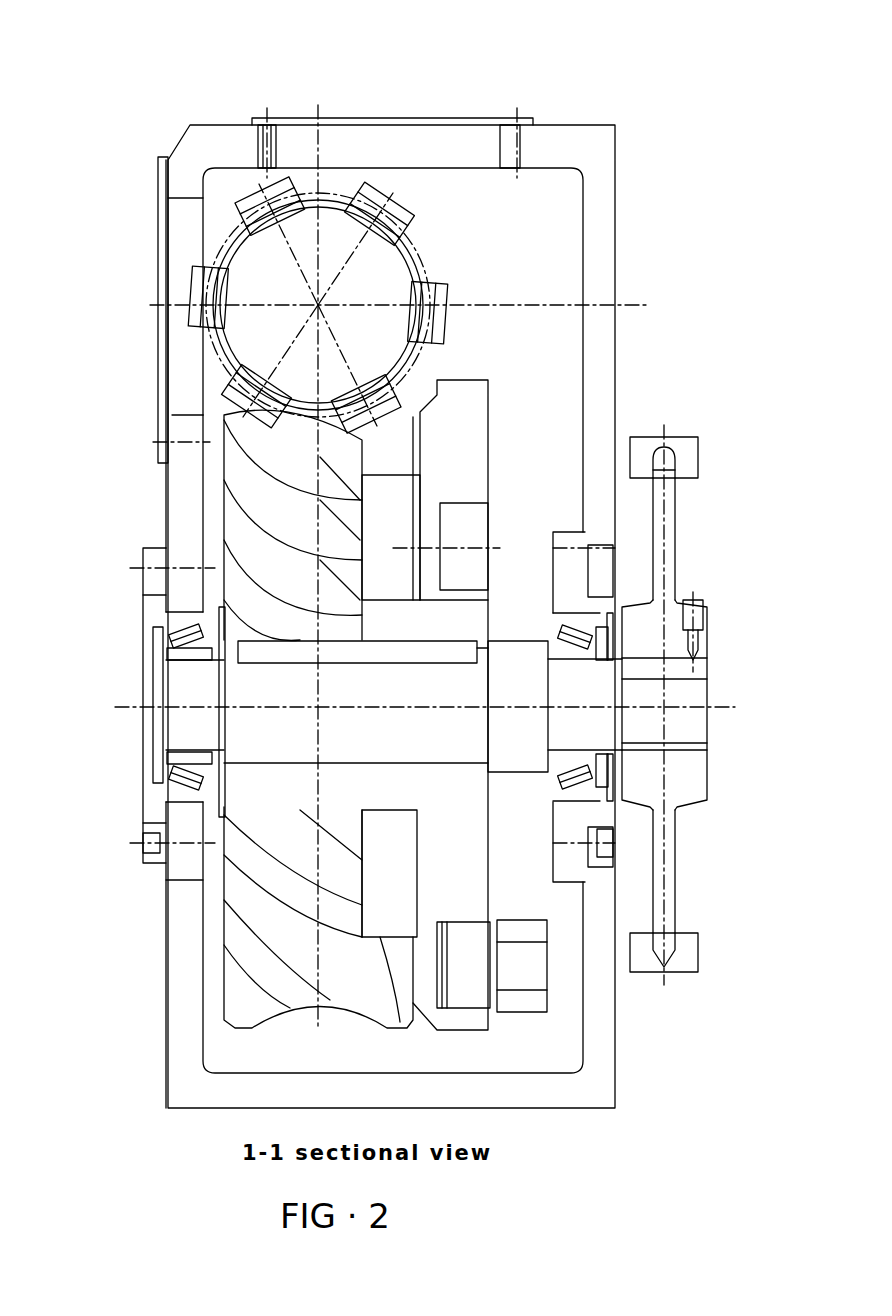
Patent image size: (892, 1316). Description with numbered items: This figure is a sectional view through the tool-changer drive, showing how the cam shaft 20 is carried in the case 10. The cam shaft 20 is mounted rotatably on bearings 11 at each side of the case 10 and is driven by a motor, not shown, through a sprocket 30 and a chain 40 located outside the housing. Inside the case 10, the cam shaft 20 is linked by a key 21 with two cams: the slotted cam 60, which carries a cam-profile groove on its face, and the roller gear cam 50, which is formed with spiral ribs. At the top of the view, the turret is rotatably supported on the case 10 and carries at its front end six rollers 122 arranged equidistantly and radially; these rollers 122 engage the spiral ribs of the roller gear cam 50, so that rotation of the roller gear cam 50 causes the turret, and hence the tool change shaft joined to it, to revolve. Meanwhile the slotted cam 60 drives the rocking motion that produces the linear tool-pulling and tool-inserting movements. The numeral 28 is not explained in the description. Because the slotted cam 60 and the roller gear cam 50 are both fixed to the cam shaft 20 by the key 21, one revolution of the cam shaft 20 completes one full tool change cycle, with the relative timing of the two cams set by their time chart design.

The case 10 is at (603, 1036).
The bearings 11 is at (173, 785).
The cam shaft 20 is at (685, 728).
The key 21 is at (275, 647).
The plug 28 is at (468, 992).
The sprocket 30 is at (668, 570).
The chain 40 is at (687, 452).
The roller gear cam 50 is at (252, 955).
The slotted cam 60 is at (475, 437).
The rollers 122 is at (378, 188).